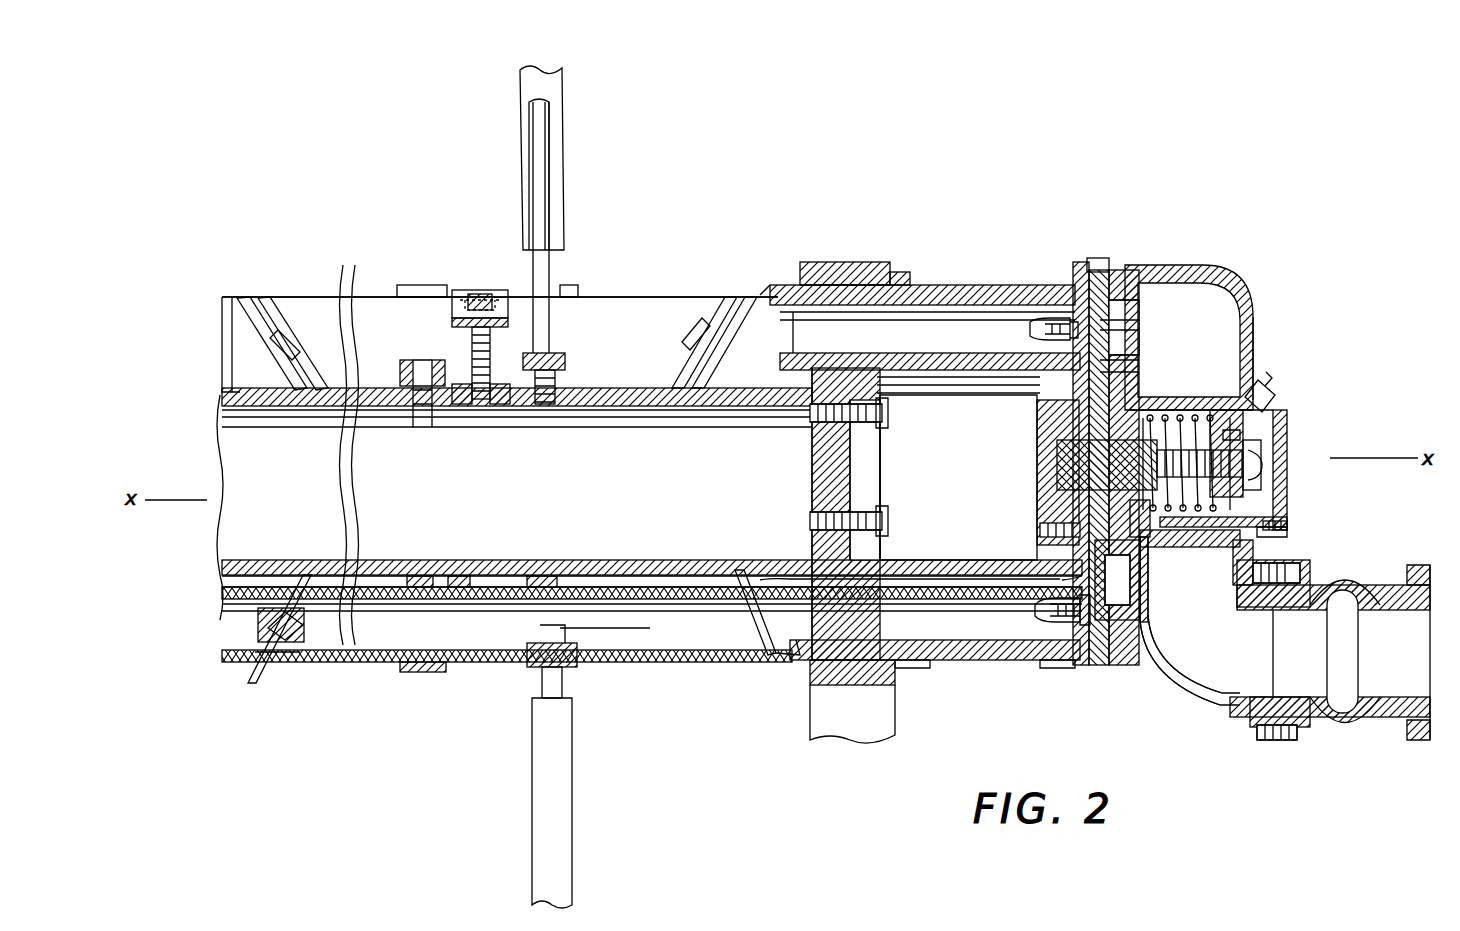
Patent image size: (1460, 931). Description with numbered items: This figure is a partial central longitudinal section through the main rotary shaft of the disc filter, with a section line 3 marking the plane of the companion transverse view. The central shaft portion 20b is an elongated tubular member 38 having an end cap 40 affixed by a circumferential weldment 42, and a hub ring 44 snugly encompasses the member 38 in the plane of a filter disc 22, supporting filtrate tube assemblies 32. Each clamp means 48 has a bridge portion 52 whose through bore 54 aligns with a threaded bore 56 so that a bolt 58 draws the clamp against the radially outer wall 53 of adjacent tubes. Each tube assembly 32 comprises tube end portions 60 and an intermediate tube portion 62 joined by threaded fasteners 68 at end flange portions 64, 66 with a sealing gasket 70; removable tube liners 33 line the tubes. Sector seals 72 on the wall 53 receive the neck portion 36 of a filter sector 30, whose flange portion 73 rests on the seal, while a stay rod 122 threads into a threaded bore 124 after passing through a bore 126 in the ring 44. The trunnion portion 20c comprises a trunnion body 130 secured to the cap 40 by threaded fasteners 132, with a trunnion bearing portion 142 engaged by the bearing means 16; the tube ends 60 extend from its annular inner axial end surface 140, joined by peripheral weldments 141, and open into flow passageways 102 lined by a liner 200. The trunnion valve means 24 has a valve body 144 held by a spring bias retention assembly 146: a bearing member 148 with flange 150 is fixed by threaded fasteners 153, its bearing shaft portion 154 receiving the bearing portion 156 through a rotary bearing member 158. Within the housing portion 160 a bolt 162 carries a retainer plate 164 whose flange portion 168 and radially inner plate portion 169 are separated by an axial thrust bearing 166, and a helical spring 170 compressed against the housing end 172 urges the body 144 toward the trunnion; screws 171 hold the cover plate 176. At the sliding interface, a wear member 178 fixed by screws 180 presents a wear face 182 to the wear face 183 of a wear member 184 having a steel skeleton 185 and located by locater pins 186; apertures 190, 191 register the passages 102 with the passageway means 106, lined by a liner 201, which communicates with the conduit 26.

The section line 3- 3 is at (493, 256).
The anti-friction bearing means 16 is at (815, 262).
The central shaft portion 20b is at (660, 297).
The trunnion portion 20c is at (935, 285).
The filter disc 22 is at (563, 131).
The trunnion valve means 24 is at (1195, 265).
The conduit 26 is at (1370, 585).
The filter sector 30 is at (532, 770).
The filtrate tube assembly 32 is at (368, 297).
The tube liner 33 is at (248, 605).
The sector neck portion 36 is at (563, 680).
The tubular member 38 is at (790, 408).
The end cap 40 is at (812, 448).
The circumferential weldment 42 is at (858, 586).
The hub ring 44 is at (373, 410).
The clamp means 48 is at (500, 290).
The bridge portion 52 is at (455, 320).
The radially outer wall 53 is at (375, 662).
The through bore 54 is at (488, 333).
The threaded bore 56 is at (484, 406).
The bolt 58 is at (472, 365).
The tube end portion 60 is at (250, 300).
The intermediate tube portion 62 is at (584, 290).
The end flange portion 64 is at (330, 406).
The end flange portion 66 is at (293, 406).
The threaded fastener 68 is at (282, 330).
The sealing gasket 70 is at (268, 300).
The sector seal 72 is at (410, 285).
The flange portion 73 is at (528, 667).
The flow passageway 102 is at (925, 469).
The passageway means 106 is at (1190, 497).
The stay rod 122 is at (551, 164).
The threaded bore 124 is at (555, 406).
The bore 126 is at (545, 353).
The trunnion body 130 is at (1008, 285).
The threaded fastener 132 is at (888, 412).
The annular inner axial end surface 140 is at (790, 660).
The peripheral weldment 141 is at (812, 580).
The trunnion bearing portion 142 is at (870, 262).
The valve body 144 is at (1253, 305).
The spring bias retention assembly 146 is at (1198, 412).
The bearing member 148 is at (1037, 456).
The flange 150 is at (1037, 400).
The threaded fastener 153 is at (1040, 530).
The bearing shaft portion 154 is at (1110, 515).
The bearing portion 156 is at (1142, 408).
The rotary bearing member 158 is at (1135, 420).
The retainer assembly housing portion 160 is at (1237, 562).
The bolt 162 is at (1262, 445).
The retainer plate 164 is at (1275, 412).
The axial thrust bearing 166 is at (1262, 428).
The flange portion 168 is at (1205, 547).
The radially inner plate portion 169 is at (1250, 485).
The helical spring 170 is at (1195, 412).
The screw 171 is at (1290, 524).
The end of housing portion 172 is at (1185, 540).
The cover plate 176 is at (1287, 497).
The wear member 178 is at (1078, 262).
The screw 180 is at (1050, 336).
The wear face 182 is at (1095, 258).
The wear face 183 is at (1045, 322).
The wear member 184 is at (1112, 318).
The steel skeleton 185 is at (1118, 270).
The locater pin 186 is at (1118, 362).
The aperture 190 is at (1045, 606).
The aperture 191 is at (1112, 610).
The liner 200 is at (960, 640).
The liner 201 is at (1175, 685).